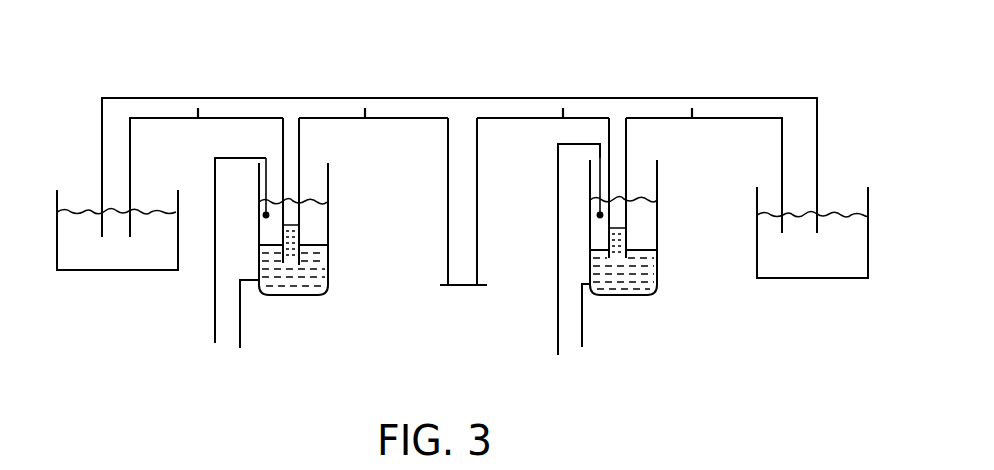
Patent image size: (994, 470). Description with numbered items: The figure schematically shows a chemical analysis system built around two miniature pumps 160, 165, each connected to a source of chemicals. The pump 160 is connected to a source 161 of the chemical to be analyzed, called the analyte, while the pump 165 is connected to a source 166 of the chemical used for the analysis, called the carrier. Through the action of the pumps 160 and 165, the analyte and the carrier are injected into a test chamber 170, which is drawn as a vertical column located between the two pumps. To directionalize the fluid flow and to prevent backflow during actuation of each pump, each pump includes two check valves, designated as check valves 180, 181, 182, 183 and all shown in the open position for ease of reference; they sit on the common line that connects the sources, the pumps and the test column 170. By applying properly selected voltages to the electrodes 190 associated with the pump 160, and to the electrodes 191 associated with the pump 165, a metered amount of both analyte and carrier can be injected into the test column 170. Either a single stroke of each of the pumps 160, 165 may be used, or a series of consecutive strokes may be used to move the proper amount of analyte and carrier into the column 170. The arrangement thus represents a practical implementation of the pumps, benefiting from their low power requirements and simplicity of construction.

The pump 160 is at (297, 297).
The source of analyte 161 is at (99, 250).
The pump 165 is at (630, 297).
The source of carrier 166 is at (827, 265).
The test chamber 170 is at (460, 288).
The check valve 180 is at (215, 108).
The check valve 181 is at (380, 105).
The check valve 182 is at (552, 105).
The check valve 183 is at (680, 108).
The electrodes 190 is at (228, 340).
The electrodes 191 is at (570, 338).